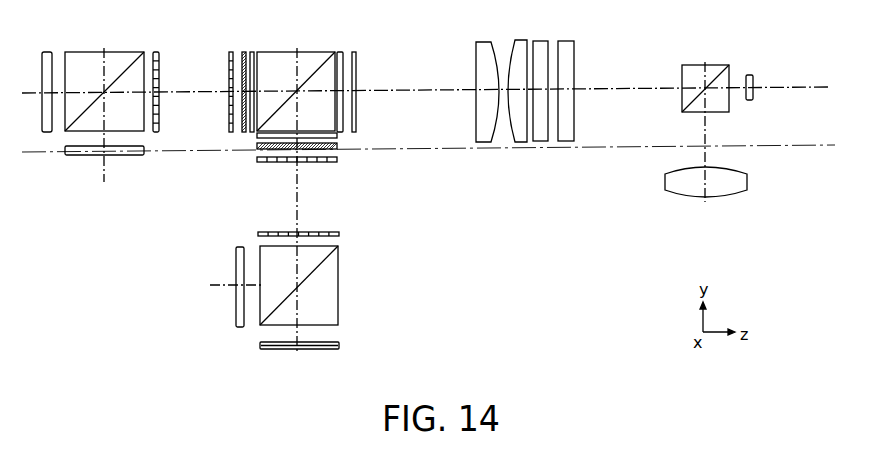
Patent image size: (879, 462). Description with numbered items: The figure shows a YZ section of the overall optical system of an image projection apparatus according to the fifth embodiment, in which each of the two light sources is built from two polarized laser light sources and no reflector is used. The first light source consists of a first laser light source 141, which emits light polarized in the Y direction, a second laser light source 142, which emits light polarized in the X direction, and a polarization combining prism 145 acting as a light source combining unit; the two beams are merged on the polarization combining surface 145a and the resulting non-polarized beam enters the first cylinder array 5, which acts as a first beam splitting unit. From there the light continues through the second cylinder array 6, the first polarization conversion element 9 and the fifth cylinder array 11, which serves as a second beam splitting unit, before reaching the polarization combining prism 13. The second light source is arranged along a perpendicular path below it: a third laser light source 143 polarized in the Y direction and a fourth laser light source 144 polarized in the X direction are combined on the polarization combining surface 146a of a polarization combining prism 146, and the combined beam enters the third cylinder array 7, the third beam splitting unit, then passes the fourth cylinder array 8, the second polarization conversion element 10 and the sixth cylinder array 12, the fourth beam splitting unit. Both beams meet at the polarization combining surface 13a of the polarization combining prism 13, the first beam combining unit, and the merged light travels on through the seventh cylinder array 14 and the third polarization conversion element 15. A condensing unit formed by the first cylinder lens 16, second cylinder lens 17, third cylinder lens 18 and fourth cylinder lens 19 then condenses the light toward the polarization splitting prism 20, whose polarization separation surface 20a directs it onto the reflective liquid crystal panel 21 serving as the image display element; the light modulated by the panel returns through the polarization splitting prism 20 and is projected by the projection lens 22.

The first cylinder array 5 is at (157, 52).
The second cylinder array 6 is at (229, 52).
The third cylinder array 7 is at (339, 234).
The fourth cylinder array 8 is at (337, 160).
The first polarization conversion element 9 is at (244, 52).
The second polarization conversion element 10 is at (337, 147).
The fifth cylinder array 11 is at (252, 52).
The sixth cylinder array 12 is at (337, 136).
The polarization combining prism 13 is at (277, 52).
The polarization combining surface 13a is at (325, 62).
The seventh cylinder array 14 is at (340, 52).
The third polarization conversion element 15 is at (355, 52).
The first cylinder lens 16 is at (487, 143).
The second cylinder lens 17 is at (520, 143).
The third cylinder lens 18 is at (542, 143).
The fourth cylinder lens 19 is at (567, 143).
The polarization splitting prism 20 is at (690, 65).
The polarization separation surface 20a is at (717, 77).
The reflective liquid crystal panel 21 is at (749, 101).
The projection lens 22 is at (748, 182).
The first laser light source 141 is at (47, 52).
The second laser light source 142 is at (144, 150).
The third laser light source 143 is at (339, 346).
The fourth laser light source 144 is at (236, 309).
The polarization combining prism 145 is at (80, 52).
The polarization combining surface 145a is at (136, 60).
The polarization combining prism 146 is at (338, 310).
The polarization combining surface 146a is at (323, 261).